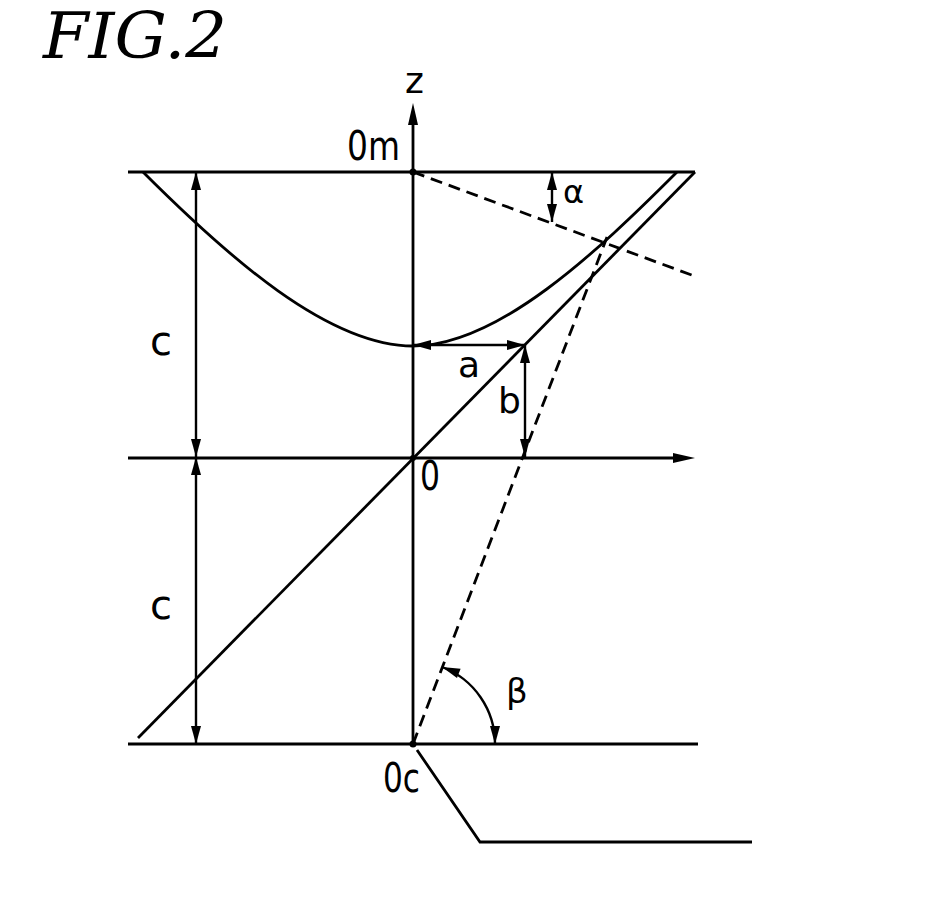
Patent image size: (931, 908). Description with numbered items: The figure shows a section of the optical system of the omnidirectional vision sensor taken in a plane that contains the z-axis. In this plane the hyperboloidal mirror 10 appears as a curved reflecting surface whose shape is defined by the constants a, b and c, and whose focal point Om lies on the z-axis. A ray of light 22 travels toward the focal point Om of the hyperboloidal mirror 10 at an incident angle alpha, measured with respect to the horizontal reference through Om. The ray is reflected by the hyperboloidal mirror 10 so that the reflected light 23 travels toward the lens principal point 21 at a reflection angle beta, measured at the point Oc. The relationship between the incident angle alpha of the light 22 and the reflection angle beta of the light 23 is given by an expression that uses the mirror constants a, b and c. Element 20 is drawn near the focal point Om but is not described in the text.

The hyperboloidal mirror 10 is at (648, 203).
The mirror origin point Om 20 is at (415, 171).
The lens principal point 21 is at (584, 796).
The light traveling toward focal point Om 22 is at (627, 250).
The light reflected toward lens principal point 23 is at (482, 578).